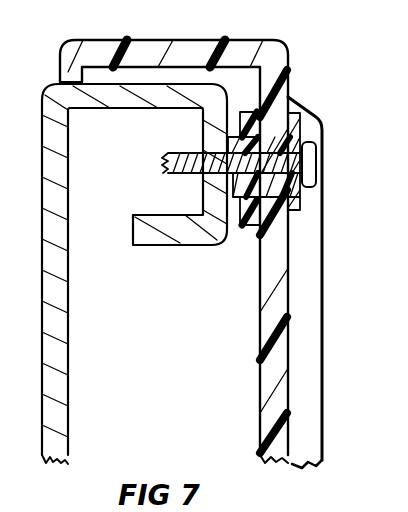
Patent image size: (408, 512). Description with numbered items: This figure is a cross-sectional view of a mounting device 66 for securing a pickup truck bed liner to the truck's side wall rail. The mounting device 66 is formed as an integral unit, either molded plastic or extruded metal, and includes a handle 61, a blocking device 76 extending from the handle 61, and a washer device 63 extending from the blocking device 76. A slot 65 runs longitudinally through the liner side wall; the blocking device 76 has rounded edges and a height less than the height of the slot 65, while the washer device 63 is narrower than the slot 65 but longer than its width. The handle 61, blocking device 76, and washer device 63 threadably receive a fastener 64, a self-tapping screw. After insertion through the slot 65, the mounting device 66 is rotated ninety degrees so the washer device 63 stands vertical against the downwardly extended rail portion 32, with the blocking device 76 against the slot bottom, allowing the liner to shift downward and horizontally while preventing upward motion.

The downwardly extended portion 32 is at (210, 183).
The handle 61 is at (292, 135).
The washer device 63 is at (247, 203).
The fastener 64 is at (315, 175).
The slot 65 is at (300, 142).
The mounting device 66 is at (207, 249).
The blocking device 76 is at (262, 210).